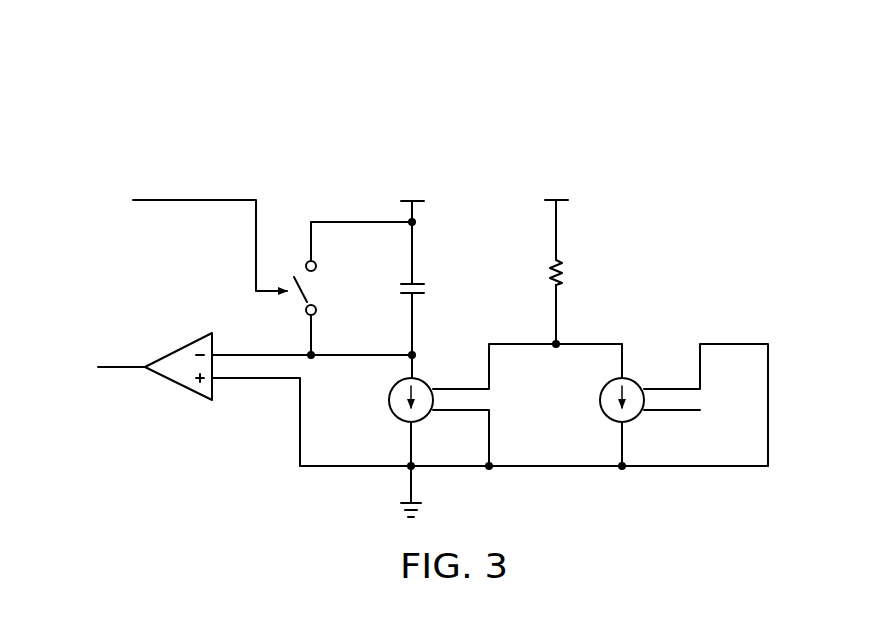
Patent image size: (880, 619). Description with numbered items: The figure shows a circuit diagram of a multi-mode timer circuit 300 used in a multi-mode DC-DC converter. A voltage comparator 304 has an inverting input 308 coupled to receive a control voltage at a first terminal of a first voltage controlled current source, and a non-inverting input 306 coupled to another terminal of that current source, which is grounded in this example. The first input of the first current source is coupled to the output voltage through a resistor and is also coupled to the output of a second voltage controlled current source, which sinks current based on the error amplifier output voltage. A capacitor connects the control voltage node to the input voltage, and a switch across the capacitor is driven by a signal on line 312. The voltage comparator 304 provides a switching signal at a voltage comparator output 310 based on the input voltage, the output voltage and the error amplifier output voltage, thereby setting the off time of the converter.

The multi-mode timer circuit 300 is at (620, 124).
The voltage comparator 304 is at (180, 348).
The non-inverting input 306 is at (255, 379).
The inverting input 308 is at (245, 355).
The voltage comparator output 310 is at (121, 368).
The reset signal line 312 is at (194, 199).